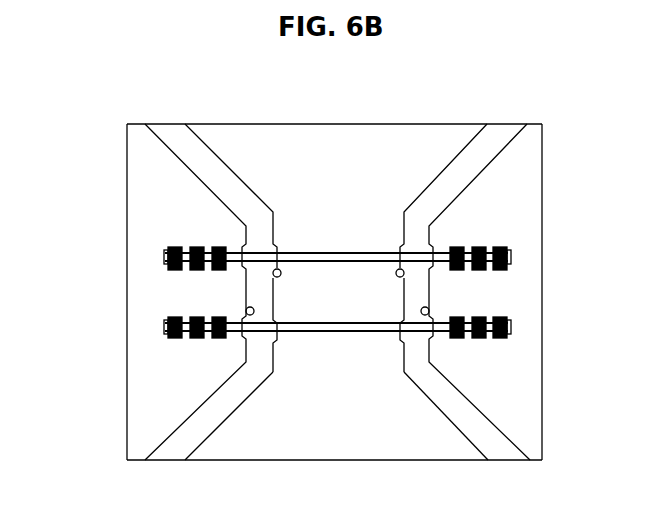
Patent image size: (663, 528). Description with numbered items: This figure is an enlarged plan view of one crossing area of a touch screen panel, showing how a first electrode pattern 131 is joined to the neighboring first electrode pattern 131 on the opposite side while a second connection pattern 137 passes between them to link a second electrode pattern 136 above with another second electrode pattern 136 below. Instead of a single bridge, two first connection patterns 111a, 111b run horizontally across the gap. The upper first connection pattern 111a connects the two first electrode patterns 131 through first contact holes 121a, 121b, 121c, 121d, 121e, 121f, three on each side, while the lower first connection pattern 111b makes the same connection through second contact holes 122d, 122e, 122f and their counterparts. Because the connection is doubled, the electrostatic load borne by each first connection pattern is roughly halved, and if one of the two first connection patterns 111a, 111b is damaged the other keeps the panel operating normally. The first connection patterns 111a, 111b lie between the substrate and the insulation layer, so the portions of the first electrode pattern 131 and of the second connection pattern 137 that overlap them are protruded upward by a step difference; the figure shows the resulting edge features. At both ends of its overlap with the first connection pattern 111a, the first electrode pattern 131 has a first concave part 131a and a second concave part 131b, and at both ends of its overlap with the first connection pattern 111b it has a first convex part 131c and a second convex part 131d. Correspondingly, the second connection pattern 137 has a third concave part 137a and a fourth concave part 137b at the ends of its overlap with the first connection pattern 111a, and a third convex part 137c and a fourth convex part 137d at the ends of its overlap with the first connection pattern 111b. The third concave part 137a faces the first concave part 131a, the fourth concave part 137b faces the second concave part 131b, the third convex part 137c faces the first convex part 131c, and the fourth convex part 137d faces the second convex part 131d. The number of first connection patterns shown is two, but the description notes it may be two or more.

The first connection pattern 111a is at (303, 253).
The first connection pattern 111b is at (337, 328).
The first contact hole 121a is at (463, 247).
The first contact hole 121b is at (485, 247).
The first contact hole 121c is at (511, 257).
The first contact hole 121d is at (213, 247).
The first contact hole 121e is at (191, 247).
The first contact hole 121f is at (164, 257).
The second contact hole 122d is at (213, 338).
The second contact hole 122e is at (191, 338).
The second contact hole 122f is at (164, 327).
The first electrode pattern 131 is at (138, 165).
The first concave part 131a is at (429, 240).
The second concave part 131b is at (246, 240).
The first convex part 131c is at (429, 311).
The second convex part 131d is at (246, 311).
The second electrode pattern 136 is at (367, 137).
The second connection pattern 137 is at (363, 340).
The third concave part 137a is at (403, 275).
The fourth concave part 137b is at (274, 275).
The third convex part 137c is at (404, 342).
The fourth convex part 137d is at (273, 342).